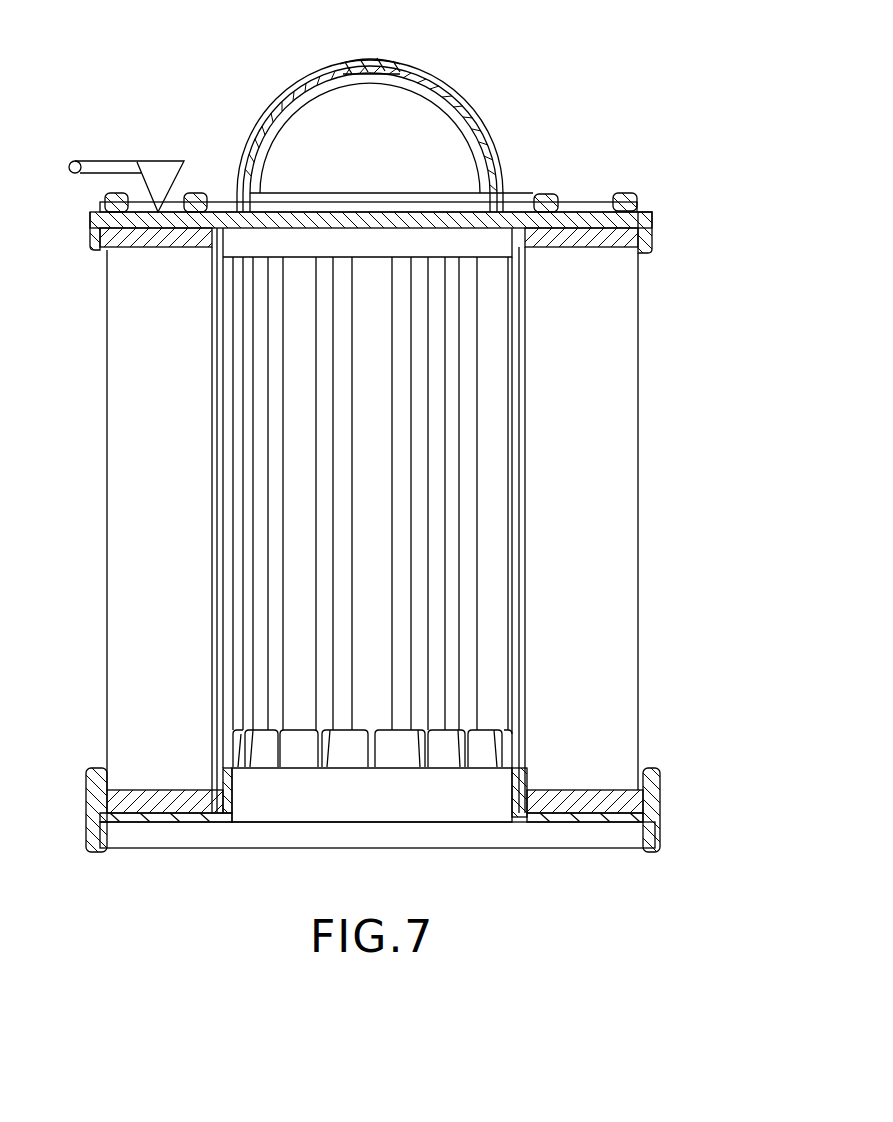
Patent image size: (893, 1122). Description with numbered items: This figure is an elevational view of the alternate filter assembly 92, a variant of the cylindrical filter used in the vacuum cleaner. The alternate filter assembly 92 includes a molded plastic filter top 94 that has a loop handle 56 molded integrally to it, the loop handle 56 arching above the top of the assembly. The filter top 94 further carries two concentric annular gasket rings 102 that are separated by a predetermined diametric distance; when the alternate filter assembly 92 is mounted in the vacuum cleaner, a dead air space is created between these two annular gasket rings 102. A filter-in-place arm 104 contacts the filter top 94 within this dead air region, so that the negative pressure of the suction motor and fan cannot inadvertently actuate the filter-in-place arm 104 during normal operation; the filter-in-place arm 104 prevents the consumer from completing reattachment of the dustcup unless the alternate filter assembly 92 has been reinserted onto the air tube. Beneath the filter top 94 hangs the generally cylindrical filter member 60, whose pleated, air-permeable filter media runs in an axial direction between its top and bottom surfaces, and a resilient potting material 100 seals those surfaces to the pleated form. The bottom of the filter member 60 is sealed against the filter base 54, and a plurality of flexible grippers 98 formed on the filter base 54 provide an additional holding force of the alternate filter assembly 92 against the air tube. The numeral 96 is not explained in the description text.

The filter base 54 is at (660, 824).
The loop handle 56 is at (452, 85).
The filter member 60 is at (620, 441).
The alternate filter assembly 92 is at (652, 208).
The filter top 94 is at (223, 212).
The top cap plate 96 is at (582, 212).
The flexible grippers 98 is at (487, 742).
The resilient potting material 100 is at (585, 247).
The annular gasket rings 102 is at (545, 196).
The filter-in-place arm 104 is at (137, 158).